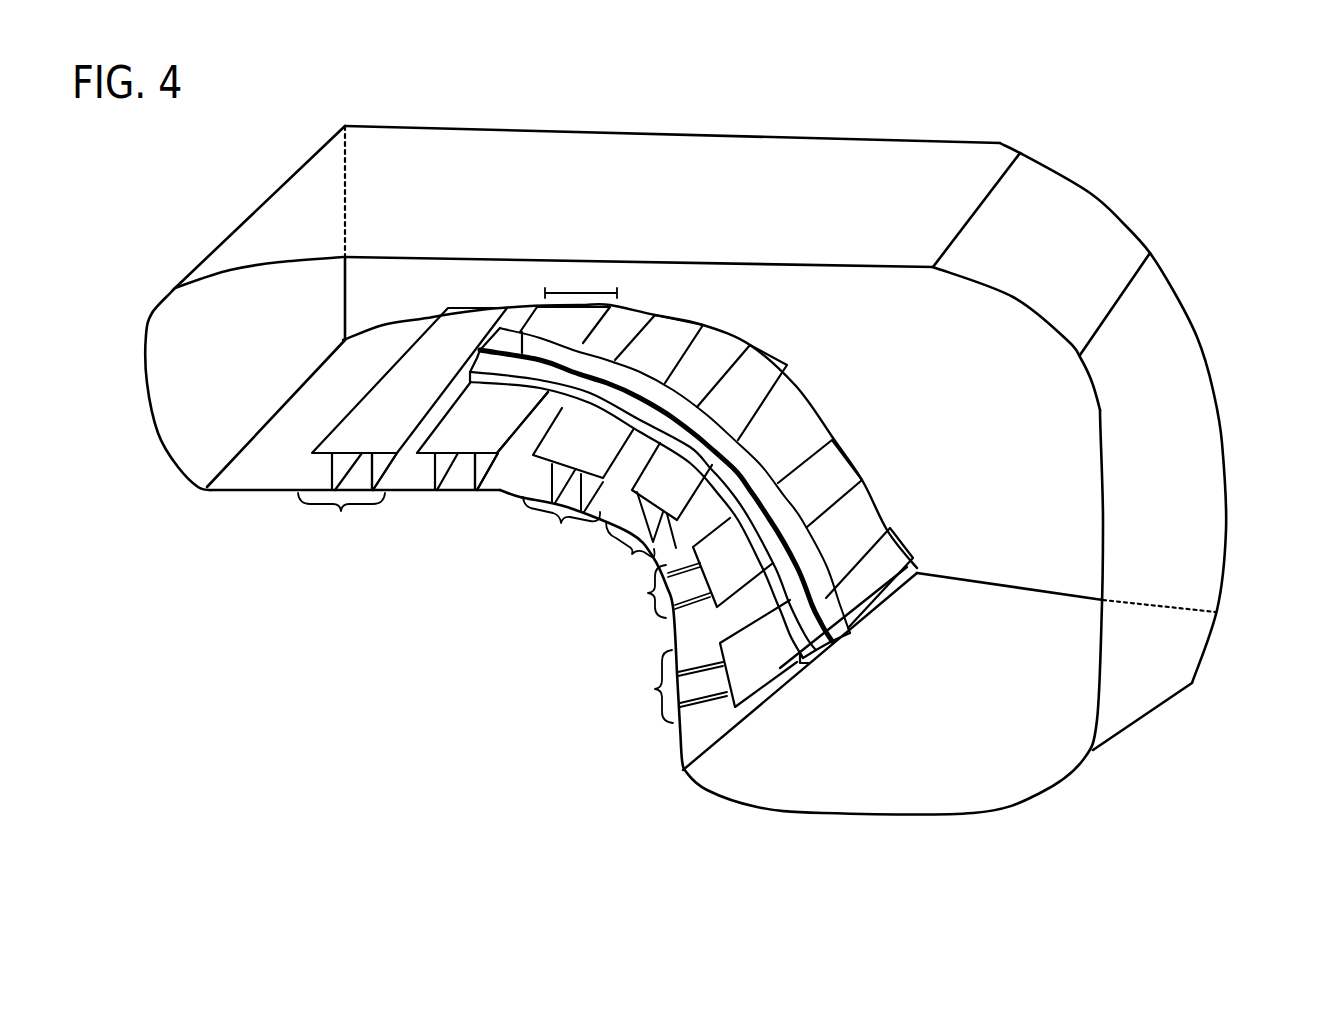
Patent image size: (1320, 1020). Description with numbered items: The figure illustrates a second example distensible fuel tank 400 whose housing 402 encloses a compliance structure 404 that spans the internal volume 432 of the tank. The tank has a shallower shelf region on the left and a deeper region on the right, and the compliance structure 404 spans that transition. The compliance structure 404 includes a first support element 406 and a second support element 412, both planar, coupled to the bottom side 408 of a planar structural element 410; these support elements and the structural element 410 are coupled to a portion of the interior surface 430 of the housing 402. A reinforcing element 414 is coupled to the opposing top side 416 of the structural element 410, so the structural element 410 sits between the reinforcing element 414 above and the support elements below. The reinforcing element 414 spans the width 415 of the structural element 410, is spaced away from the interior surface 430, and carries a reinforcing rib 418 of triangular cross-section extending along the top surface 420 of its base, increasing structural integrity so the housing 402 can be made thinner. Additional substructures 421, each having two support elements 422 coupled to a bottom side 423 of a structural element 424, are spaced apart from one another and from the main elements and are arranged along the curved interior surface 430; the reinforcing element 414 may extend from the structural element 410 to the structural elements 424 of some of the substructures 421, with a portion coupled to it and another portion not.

The distensible fuel tank 400 is at (1268, 227).
The housing 402 is at (270, 183).
The compliance structure 404 is at (882, 444).
The first support element 406 is at (432, 483).
The bottom side 408 is at (432, 452).
The structural element 410 is at (481, 422).
The second support element 412 is at (484, 458).
The reinforcing element 414 is at (456, 347).
The width 415 is at (567, 290).
The top side 416 is at (492, 450).
The reinforcing rib 418 is at (524, 333).
The top surface 420 is at (598, 400).
The substructures 421 is at (512, 608).
The support elements 422 is at (553, 475).
The bottom side 423 is at (598, 484).
The structural element 424 is at (601, 466).
The interior surface 430 is at (710, 731).
The internal volume 432 is at (998, 392).